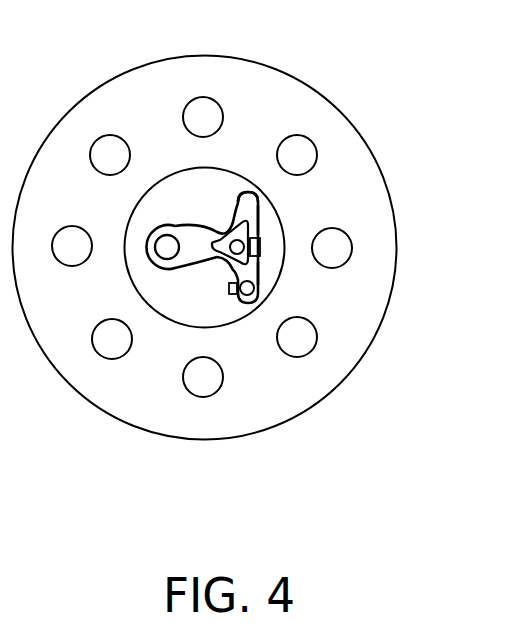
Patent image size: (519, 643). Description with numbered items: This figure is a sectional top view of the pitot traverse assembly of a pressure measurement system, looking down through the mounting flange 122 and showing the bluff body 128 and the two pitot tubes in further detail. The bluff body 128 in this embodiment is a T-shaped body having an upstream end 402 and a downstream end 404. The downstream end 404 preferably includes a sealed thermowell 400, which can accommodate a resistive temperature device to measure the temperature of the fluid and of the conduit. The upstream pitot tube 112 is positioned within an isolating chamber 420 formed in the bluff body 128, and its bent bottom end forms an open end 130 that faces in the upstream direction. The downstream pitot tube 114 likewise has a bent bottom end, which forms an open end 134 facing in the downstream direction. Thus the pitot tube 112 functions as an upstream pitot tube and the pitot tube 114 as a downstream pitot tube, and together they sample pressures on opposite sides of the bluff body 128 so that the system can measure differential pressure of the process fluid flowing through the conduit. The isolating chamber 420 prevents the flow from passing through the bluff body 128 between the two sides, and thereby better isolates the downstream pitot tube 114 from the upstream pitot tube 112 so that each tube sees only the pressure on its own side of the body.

The upstream pitot tube 112 is at (257, 262).
The downstream pitot tube 114 is at (243, 300).
The mounting flange 122 is at (367, 192).
The bluff body 128 is at (247, 193).
The open end 130 is at (260, 247).
The open end 134 is at (237, 288).
The sealed thermowell 400 is at (163, 242).
The upstream end 402 is at (263, 220).
The downstream end 404 is at (143, 245).
The isolating chamber 420 is at (255, 272).